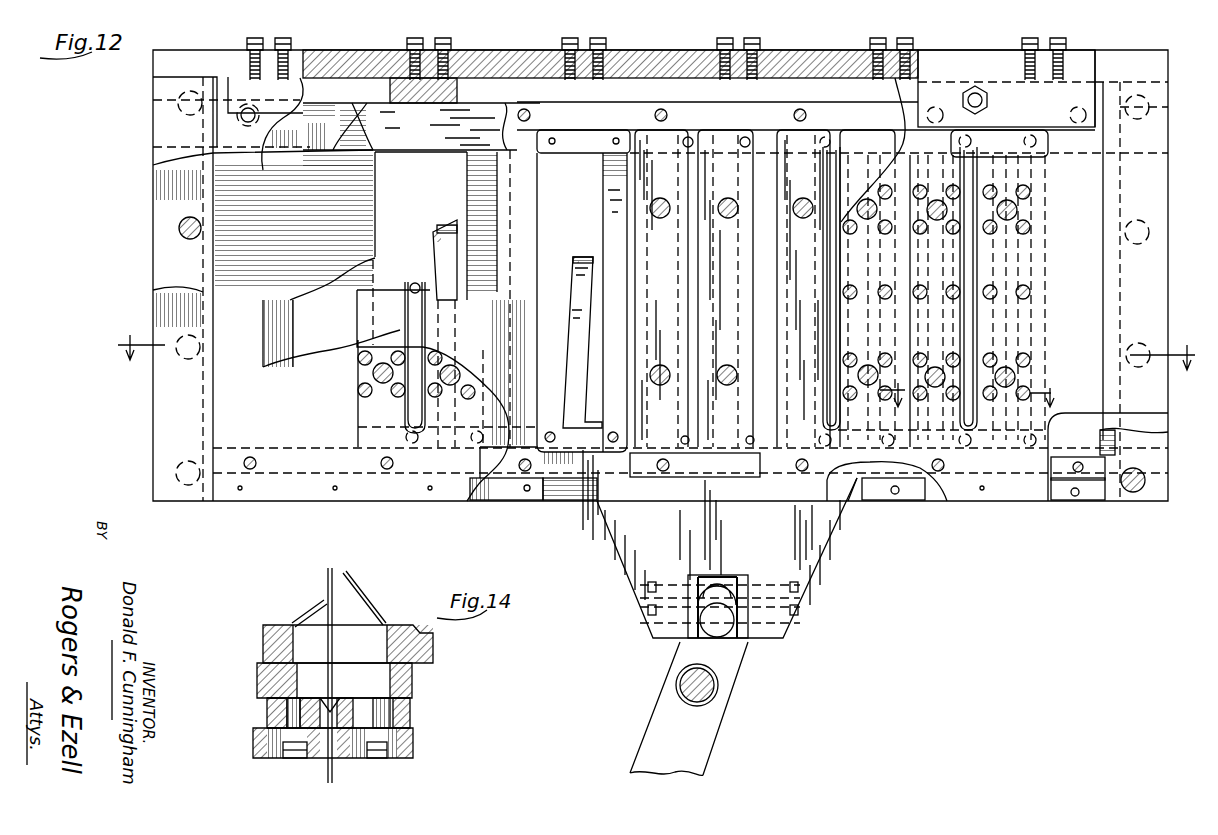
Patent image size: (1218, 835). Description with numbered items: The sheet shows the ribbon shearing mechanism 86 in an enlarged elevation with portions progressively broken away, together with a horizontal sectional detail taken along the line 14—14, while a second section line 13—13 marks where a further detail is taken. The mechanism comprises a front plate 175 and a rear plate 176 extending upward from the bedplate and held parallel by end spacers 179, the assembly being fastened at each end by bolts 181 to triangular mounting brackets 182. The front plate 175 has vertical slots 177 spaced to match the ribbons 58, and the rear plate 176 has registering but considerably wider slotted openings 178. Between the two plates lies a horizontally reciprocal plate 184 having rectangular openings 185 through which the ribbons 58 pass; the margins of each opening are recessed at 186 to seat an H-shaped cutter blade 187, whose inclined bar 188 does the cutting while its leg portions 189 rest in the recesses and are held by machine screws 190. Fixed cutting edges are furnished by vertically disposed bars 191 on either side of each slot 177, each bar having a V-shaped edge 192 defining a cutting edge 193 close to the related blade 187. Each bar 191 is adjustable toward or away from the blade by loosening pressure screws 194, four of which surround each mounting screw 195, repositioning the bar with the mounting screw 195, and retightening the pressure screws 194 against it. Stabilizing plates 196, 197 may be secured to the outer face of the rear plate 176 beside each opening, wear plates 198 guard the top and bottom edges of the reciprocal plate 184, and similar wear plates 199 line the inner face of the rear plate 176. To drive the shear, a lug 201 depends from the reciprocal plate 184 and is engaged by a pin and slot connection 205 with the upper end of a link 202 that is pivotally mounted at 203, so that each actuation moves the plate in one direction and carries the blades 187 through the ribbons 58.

In FIG. 12, the section line 13— 13 is at (656, 349).
In FIG. 12, the section line 14— 14 is at (976, 387).
In FIG. 14, the ribbon 58 is at (328, 572).
In FIG. 12, the ribbon shearing mechanism 86 is at (1108, 52).
In FIG. 12, the front plate 175 is at (300, 490).
In FIG. 12, the rear plate 176 is at (168, 276).
In FIG. 14, the rear plate 176 is at (430, 645).
In FIG. 12, the vertical slot 177 is at (406, 428).
In FIG. 12, the slotted vertical opening 178 is at (378, 210).
In FIG. 14, the slotted vertical opening 178 is at (340, 638).
In FIG. 12, the end spacer 179 is at (163, 207).
In FIG. 12, the bolt 181 is at (182, 228).
In FIG. 12, the mounting bracket 182 is at (160, 118).
In FIG. 12, the reciprocal plate 184 is at (345, 275).
In FIG. 14, the reciprocal plate 184 is at (415, 672).
In FIG. 12, the rectangular opening 185 is at (540, 198).
In FIG. 14, the rectangular opening 185 is at (305, 665).
In FIG. 12, the recess 186 is at (572, 143).
In FIG. 12, the cutter blade 187 is at (426, 247).
In FIG. 12, the bar of the H 188 is at (443, 228).
In FIG. 14, the bar of the H 188 is at (342, 680).
In FIG. 12, the leg portion 189 is at (548, 432).
In FIG. 12, the machine screw 190 is at (562, 450).
In FIG. 12, the vertically disposed bar 191 is at (725, 138).
In FIG. 14, the vertically disposed bar 191 is at (263, 705).
In FIG. 14, the V-shaped edge 192 is at (268, 715).
In FIG. 14, the cutting edge 193 is at (368, 712).
In FIG. 12, the pressure screw 194 is at (1030, 193).
In FIG. 14, the pressure screw 194 is at (265, 758).
In FIG. 12, the mounting screw 195 is at (650, 210).
In FIG. 14, the mounting screw 195 is at (290, 758).
In FIG. 14, the stabilizing plate 196 is at (308, 615).
In FIG. 14, the stabilizing plate 197 is at (398, 580).
In FIG. 12, the wear plate 198 is at (638, 88).
In FIG. 12, the wear plate 199 is at (360, 110).
In FIG. 12, the lug 201 is at (835, 535).
In FIG. 12, the link 202 is at (698, 748).
In FIG. 12, the pivot 203 is at (712, 688).
In FIG. 12, the pin and slot connection 205 is at (730, 628).